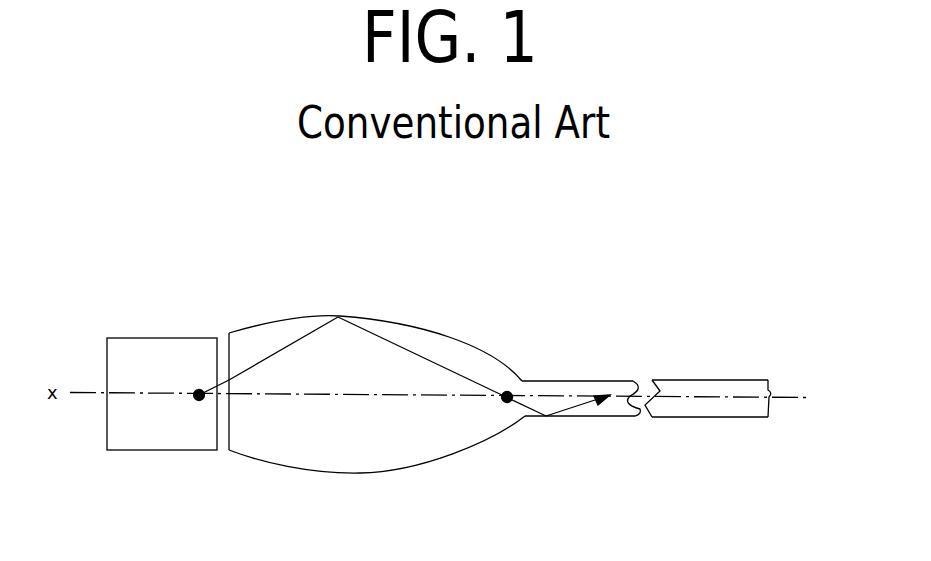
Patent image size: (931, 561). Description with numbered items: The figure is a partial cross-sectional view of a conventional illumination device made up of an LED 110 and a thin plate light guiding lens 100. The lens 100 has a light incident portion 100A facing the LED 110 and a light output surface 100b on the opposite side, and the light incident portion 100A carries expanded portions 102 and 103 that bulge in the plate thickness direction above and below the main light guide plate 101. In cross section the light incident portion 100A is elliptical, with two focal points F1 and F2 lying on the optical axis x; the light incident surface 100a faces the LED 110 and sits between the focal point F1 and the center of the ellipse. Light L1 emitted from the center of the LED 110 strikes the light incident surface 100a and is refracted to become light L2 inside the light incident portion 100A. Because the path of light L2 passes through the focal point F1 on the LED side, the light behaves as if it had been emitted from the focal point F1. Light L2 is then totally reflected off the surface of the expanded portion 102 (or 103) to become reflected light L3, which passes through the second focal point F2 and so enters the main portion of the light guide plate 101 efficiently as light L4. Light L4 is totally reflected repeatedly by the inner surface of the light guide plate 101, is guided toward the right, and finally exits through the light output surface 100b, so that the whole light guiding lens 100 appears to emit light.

The LED 110 is at (132, 338).
The thin plate light guiding lens 100 is at (521, 402).
The light incident portion 100A is at (389, 402).
The light incident surface 100a is at (231, 424).
The light output surface 100b is at (770, 380).
The light guide plate 101 is at (667, 404).
The expanded portion 102 is at (414, 324).
The expanded portion 103 is at (373, 474).
The focal point F1 is at (190, 413).
The focal point F2 is at (488, 413).
The light L1 is at (210, 388).
The light L2 is at (293, 343).
The reflected light L3 is at (420, 357).
The light L4 is at (583, 418).